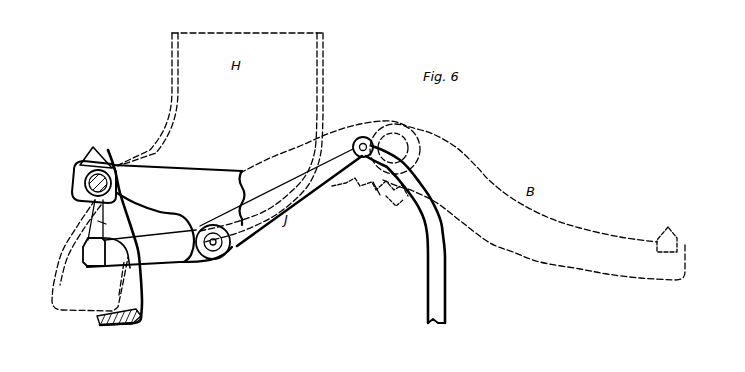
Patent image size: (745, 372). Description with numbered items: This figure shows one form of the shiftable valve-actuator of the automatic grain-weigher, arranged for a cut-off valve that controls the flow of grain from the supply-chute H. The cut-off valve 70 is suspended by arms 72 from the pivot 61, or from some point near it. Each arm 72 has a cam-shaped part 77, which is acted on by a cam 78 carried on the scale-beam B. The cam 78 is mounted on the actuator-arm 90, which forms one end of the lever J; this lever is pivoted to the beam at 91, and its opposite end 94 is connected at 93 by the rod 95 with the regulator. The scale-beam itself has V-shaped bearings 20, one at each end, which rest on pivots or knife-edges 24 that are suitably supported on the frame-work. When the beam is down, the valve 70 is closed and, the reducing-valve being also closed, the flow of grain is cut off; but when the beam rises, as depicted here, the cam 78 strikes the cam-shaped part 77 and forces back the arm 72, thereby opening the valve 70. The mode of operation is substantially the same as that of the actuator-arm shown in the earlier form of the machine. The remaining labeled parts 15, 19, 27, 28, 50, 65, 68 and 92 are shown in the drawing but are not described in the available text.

The lug 15 is at (97, 153).
The foot rest body 19 is at (179, 213).
The V-shaped bearings 20 is at (382, 186).
The pivot or knife-edge 24 is at (381, 194).
The heel clip 27 is at (672, 236).
The boot strap 28 is at (592, 242).
The pivot boss 50 is at (396, 131).
The pivot 61 is at (85, 181).
The shoe 65 is at (77, 312).
The stop block 68 is at (86, 242).
The cut-off valve 70 is at (117, 326).
The arm 72 is at (136, 285).
The cam-shaped part 77 is at (98, 221).
The cam 78 is at (105, 220).
The actuator-arm 90 is at (178, 259).
The pivot of lever 91 is at (213, 242).
The pivot pin 92 is at (230, 243).
The connection point 93 is at (363, 141).
The opposite end of lever 94 is at (325, 172).
The rod 95 is at (440, 275).